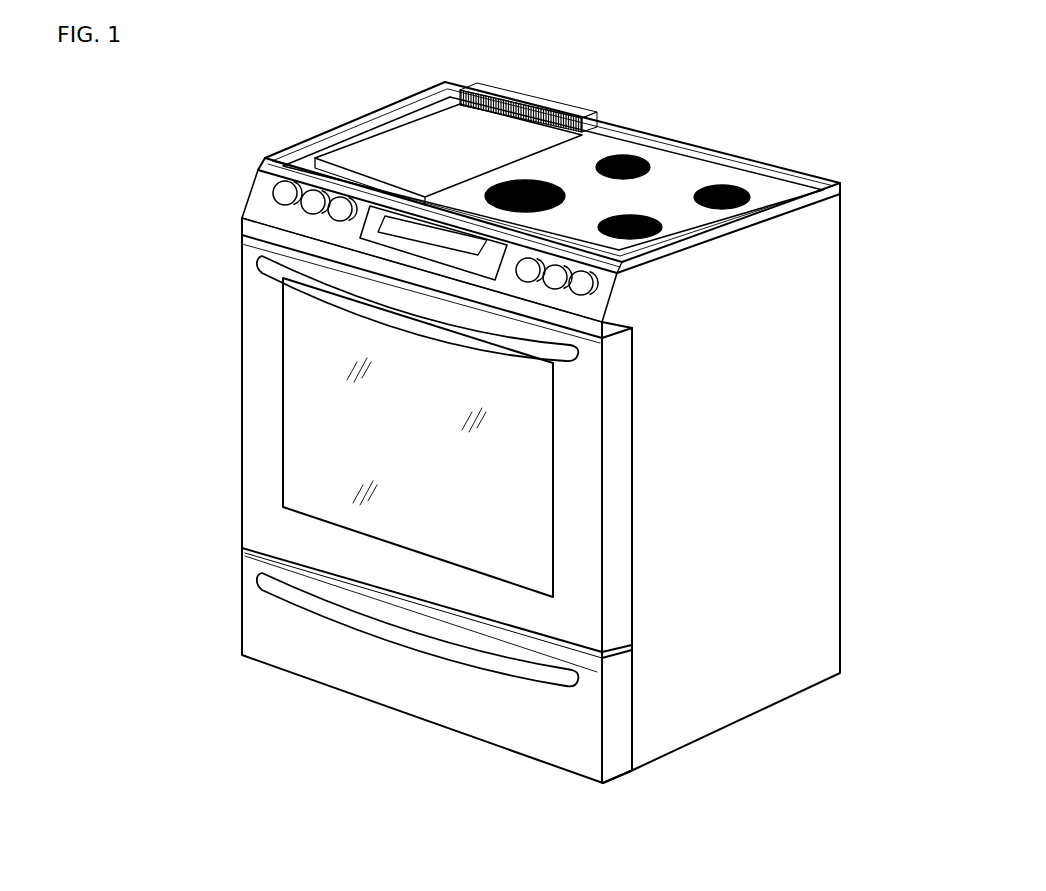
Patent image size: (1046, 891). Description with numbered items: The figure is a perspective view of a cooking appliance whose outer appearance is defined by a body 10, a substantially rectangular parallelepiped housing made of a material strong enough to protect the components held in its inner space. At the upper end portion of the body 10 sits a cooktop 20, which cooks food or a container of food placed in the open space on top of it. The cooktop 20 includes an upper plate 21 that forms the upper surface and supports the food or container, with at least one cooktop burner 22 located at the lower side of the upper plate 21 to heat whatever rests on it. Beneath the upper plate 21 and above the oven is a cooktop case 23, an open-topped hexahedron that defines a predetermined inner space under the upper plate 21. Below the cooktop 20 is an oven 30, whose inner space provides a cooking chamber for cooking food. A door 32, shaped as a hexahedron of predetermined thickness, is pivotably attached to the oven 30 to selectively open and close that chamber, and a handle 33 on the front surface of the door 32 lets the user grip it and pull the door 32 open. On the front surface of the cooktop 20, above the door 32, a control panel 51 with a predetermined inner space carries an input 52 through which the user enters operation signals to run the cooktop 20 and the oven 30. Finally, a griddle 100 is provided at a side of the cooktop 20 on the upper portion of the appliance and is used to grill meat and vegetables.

The body 10 is at (853, 333).
The cooktop 20 is at (770, 152).
The upper plate 21 is at (665, 178).
The cooktop burner 22 is at (553, 185).
The cooktop case 23 is at (827, 217).
The oven 30 is at (387, 509).
The door 32 is at (258, 428).
The handle 33 is at (275, 268).
The control panel 51 is at (245, 174).
The input 52 is at (334, 210).
The griddle 100 is at (418, 120).